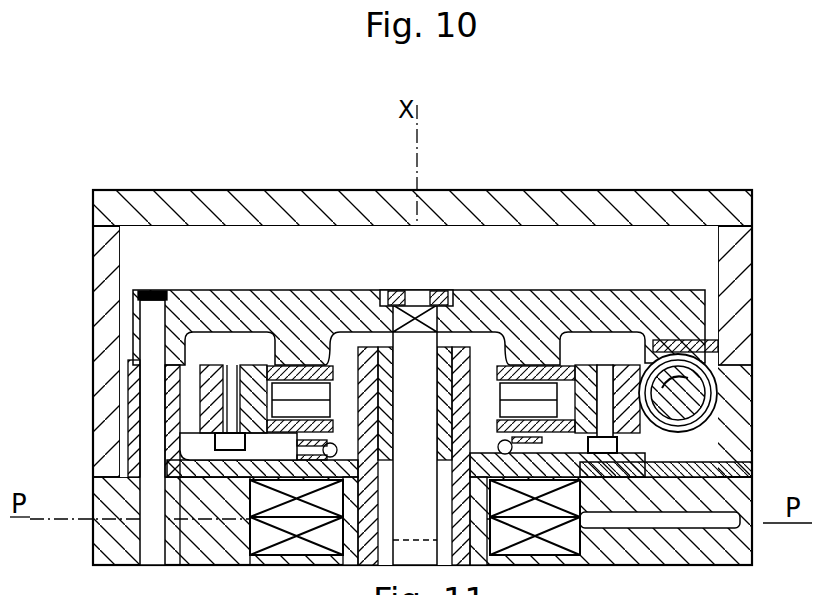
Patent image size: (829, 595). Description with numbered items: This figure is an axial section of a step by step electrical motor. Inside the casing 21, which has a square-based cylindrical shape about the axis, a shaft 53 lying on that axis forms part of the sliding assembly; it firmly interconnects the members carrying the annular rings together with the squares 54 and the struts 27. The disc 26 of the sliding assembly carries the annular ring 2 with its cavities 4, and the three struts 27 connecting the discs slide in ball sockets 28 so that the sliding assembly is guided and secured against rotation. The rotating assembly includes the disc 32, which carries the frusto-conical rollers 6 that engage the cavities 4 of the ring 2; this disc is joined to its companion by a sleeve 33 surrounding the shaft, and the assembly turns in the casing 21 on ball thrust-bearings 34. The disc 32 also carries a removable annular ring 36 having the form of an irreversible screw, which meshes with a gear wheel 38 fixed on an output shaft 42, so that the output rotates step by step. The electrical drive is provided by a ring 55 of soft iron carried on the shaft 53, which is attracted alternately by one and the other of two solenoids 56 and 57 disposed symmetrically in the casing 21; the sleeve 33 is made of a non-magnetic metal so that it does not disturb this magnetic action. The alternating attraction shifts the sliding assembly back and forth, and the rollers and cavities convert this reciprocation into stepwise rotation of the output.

The casing 21 is at (109, 186).
The disc 26 is at (208, 312).
The annular ring 2 is at (292, 345).
The cavities 4 is at (300, 372).
The frusto-conical rollers 6 is at (310, 400).
The squares 54 is at (402, 297).
The removable annular ring 36 is at (607, 423).
The gear wheel 38 is at (707, 377).
The output shaft 42 is at (680, 402).
The solenoid 57 is at (560, 498).
The ball sockets 28 is at (137, 382).
The struts 27 is at (150, 413).
The disc 32 is at (163, 448).
The ball thrust-bearings 34 is at (163, 475).
The sleeve 33 is at (163, 507).
The shaft 53 is at (429, 428).
The ring 55 is at (398, 540).
The solenoid 56 is at (568, 543).